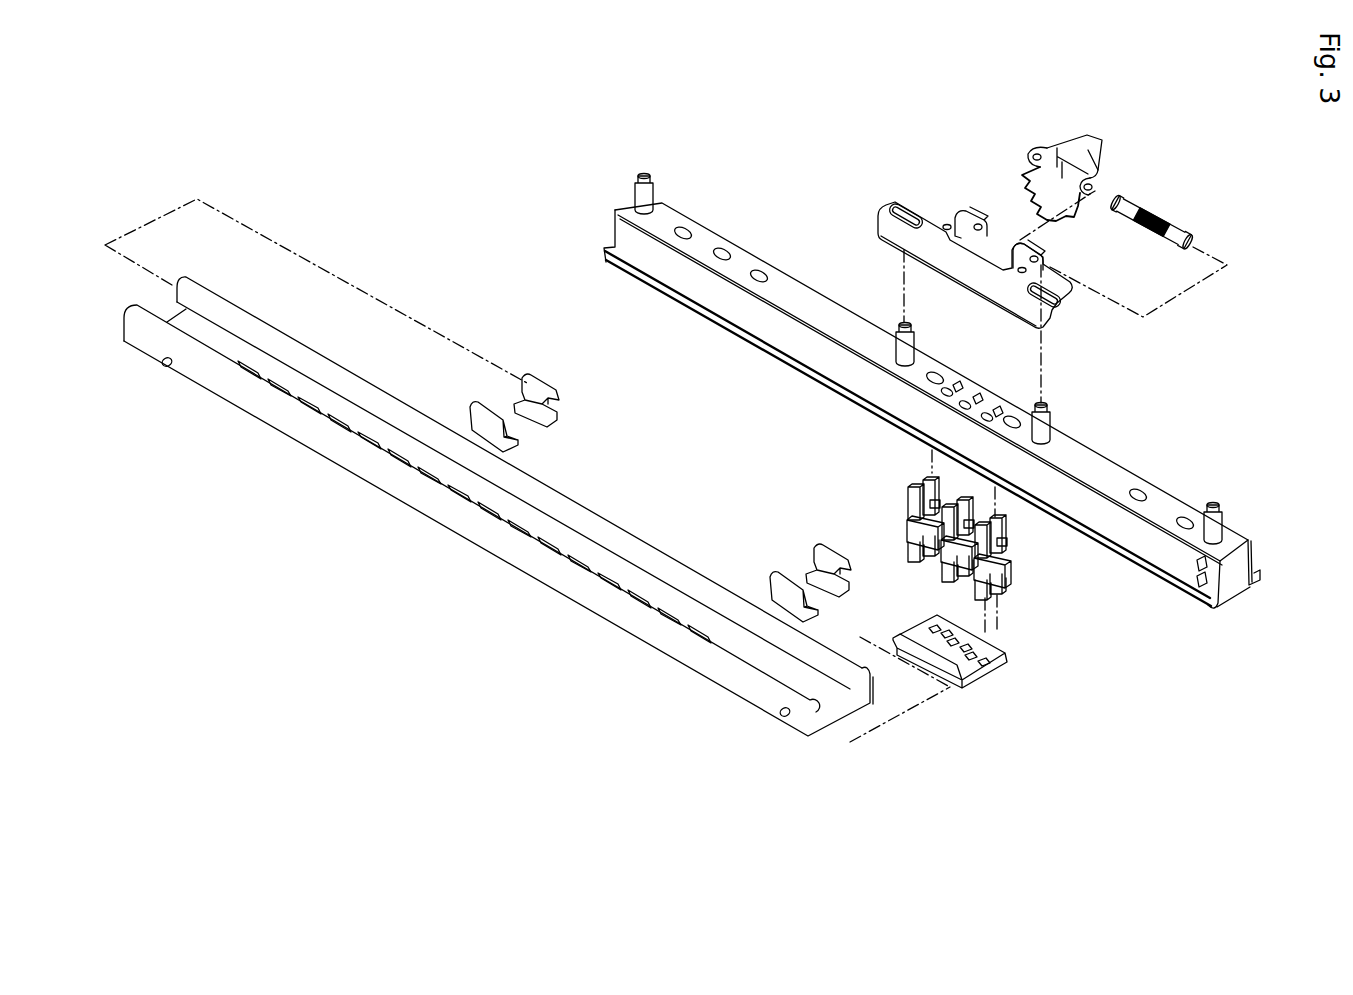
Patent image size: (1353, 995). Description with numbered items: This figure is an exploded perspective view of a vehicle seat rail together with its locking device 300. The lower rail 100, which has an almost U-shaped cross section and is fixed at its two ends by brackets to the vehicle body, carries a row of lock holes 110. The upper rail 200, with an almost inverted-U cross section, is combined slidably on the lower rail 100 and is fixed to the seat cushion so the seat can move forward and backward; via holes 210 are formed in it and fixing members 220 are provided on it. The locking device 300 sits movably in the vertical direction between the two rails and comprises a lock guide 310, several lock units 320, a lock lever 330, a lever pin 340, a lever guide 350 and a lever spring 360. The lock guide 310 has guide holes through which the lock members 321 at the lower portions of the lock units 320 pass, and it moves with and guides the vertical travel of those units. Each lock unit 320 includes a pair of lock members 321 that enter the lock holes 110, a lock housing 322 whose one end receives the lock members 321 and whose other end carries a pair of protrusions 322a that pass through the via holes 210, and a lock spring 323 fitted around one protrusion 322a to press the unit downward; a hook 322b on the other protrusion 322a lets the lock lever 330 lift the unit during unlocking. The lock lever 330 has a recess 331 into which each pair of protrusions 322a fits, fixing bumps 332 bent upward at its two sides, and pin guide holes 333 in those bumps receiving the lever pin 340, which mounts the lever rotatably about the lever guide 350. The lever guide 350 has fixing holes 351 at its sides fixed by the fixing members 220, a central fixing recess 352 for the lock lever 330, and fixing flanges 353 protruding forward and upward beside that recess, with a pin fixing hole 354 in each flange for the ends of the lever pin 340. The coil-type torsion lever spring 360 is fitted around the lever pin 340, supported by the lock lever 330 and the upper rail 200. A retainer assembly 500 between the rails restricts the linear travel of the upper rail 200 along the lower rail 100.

The lower rail 100 is at (498, 506).
The lock holes 110 is at (550, 540).
The upper rail 200 is at (932, 391).
The via holes 210 is at (965, 390).
The fixing members 220 is at (1046, 420).
The locking device 300 is at (1032, 631).
The lock guide 310 is at (973, 678).
The lock units 320 is at (1039, 593).
The lock members 321 is at (993, 610).
The lock housing 322 is at (1067, 576).
The protrusions 322a is at (1002, 523).
The hook 322b is at (1000, 523).
The lock spring 323 is at (983, 600).
The lock lever 330 is at (1101, 165).
The recess 331 is at (1073, 214).
The fixing bumps 332 is at (1040, 150).
The pin guide holes 333 is at (1093, 190).
The lever pin 340 is at (1181, 185).
The lever guide 350 is at (949, 212).
The fixing holes 351 is at (903, 207).
The fixing recess 352 is at (988, 262).
The fixing flanges 353 is at (962, 176).
The hinge hole 354 is at (977, 222).
The lever spring 360 is at (1160, 225).
The retainer assembly 500 is at (820, 573).